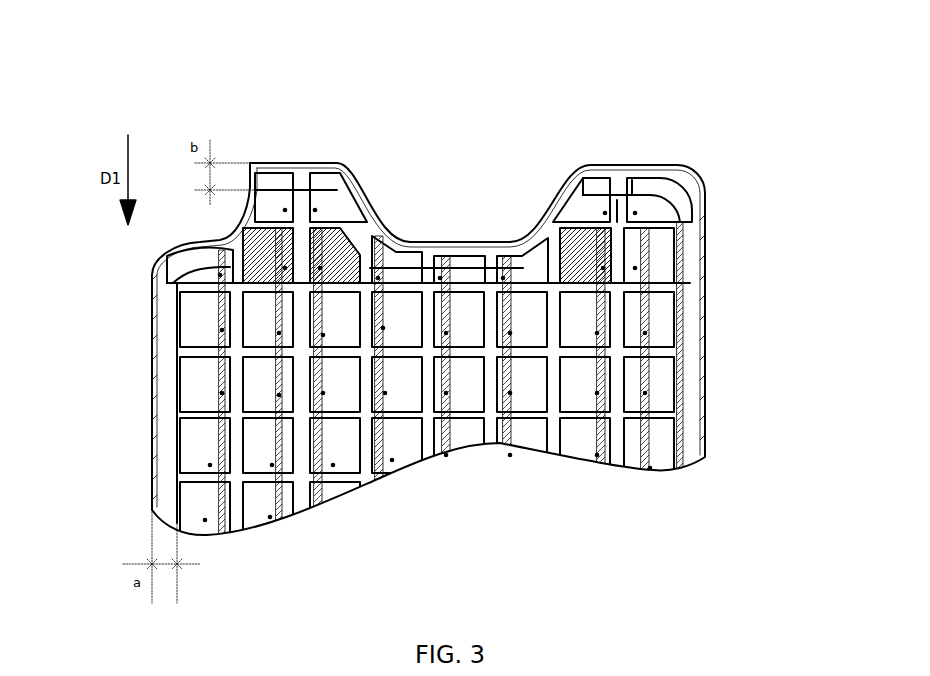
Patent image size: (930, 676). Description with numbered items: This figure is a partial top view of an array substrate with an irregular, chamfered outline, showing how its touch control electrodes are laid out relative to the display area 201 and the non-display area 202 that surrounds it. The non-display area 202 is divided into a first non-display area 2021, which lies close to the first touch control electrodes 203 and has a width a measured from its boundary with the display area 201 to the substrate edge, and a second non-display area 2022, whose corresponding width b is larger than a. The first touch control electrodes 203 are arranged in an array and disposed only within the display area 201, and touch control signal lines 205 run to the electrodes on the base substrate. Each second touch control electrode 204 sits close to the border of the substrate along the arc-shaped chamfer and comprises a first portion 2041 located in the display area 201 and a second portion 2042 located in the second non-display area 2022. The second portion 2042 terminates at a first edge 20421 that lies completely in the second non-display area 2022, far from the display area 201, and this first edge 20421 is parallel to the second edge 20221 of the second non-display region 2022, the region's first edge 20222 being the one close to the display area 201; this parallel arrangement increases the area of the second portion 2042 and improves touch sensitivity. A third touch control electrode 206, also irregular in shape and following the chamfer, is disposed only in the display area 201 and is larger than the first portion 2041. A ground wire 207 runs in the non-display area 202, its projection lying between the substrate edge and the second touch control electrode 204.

The display area 201 is at (688, 413).
The non-display area 202 is at (347, 385).
The first non-display area 2021 is at (172, 312).
The second non-display area 2022 is at (158, 267).
The first touch control electrode 203 is at (655, 266).
The second touch control electrode 204 is at (696, 119).
The first portion 2041 is at (660, 215).
The second portion 2042 is at (663, 187).
The first edge 20421 is at (647, 178).
The second edge 20221 is at (632, 195).
The first edge 20222 is at (617, 222).
The touch control signal line 205 is at (643, 323).
The third touch control electrode 206 is at (372, 232).
The ground wire 207 is at (485, 244).